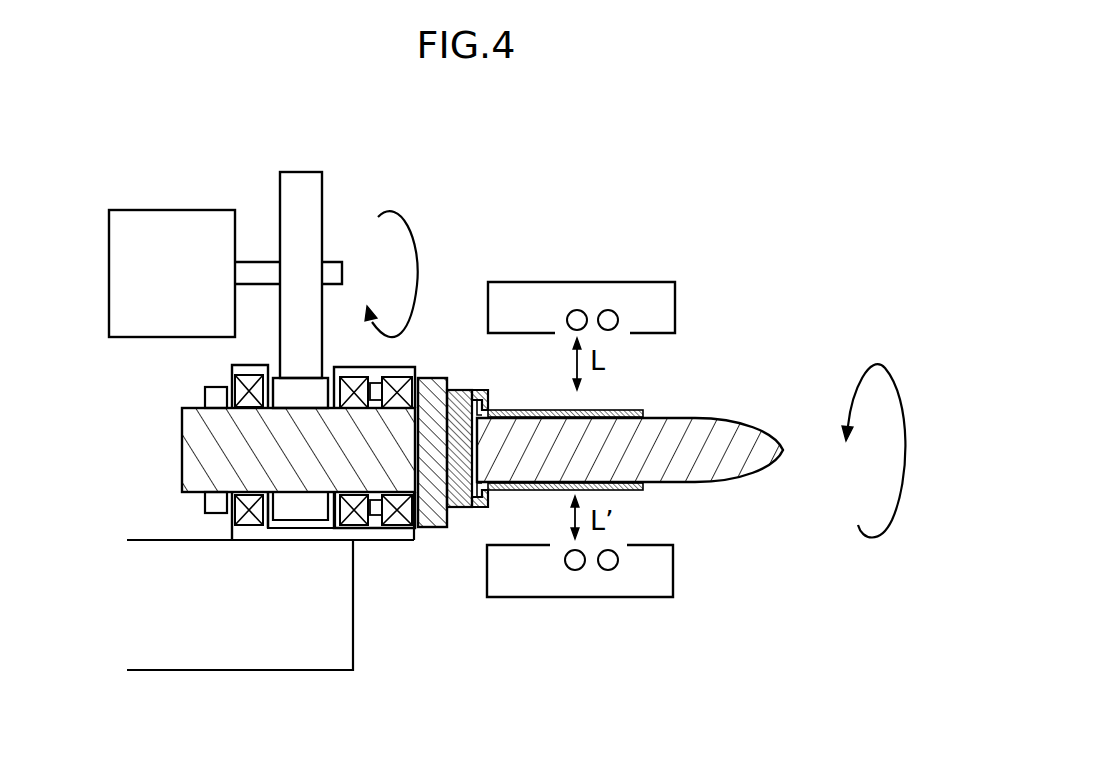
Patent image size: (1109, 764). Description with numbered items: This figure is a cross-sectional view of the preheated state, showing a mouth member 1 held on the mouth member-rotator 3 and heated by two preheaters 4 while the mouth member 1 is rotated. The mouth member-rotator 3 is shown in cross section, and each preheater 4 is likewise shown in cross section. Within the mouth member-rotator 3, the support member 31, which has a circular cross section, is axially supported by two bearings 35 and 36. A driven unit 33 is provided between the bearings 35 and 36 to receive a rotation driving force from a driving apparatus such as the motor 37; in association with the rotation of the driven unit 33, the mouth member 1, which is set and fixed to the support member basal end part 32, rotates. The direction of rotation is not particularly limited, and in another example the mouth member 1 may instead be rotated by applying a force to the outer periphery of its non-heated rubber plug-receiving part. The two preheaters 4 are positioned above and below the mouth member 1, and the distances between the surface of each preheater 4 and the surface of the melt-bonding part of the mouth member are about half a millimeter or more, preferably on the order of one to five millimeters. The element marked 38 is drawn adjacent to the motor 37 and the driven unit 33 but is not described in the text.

The mouth member 1 is at (458, 388).
The mouth member-rotator 3 is at (466, 547).
The preheater 4 is at (545, 303).
The support member 31 is at (707, 437).
The support member basal end part 32 is at (433, 513).
The driven unit 33 is at (252, 430).
The bearing 35 is at (247, 520).
The bearing 36 is at (380, 374).
The motor 37 is at (175, 218).
The drive shaft / pulley 38 is at (300, 178).